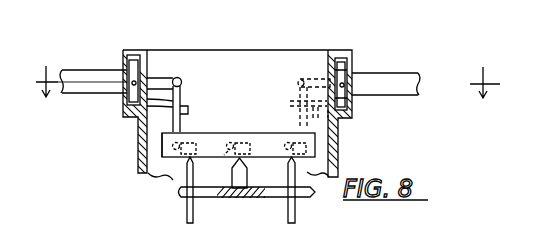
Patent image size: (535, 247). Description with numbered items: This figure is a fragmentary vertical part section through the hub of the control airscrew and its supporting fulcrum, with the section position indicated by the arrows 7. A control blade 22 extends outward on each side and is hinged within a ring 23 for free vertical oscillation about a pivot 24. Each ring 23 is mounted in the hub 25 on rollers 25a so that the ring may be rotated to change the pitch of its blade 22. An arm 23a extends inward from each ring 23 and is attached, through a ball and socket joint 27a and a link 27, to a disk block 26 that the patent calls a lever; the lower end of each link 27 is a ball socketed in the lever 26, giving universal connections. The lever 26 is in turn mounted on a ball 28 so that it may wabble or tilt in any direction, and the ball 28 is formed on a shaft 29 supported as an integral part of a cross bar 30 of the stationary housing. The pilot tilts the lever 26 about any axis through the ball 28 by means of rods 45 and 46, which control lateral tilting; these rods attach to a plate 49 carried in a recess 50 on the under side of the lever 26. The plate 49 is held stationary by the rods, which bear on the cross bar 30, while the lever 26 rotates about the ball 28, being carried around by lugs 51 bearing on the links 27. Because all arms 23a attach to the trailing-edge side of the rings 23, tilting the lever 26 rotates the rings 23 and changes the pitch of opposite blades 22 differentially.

The section line 7- 7 is at (268, 89).
The control blade 22 is at (421, 85).
The ring 23 is at (343, 72).
The arm 23a is at (161, 80).
The pivot 24 is at (345, 91).
The hub 25 is at (277, 50).
The roller 25a is at (126, 61).
The disk block (lever) 26 is at (207, 138).
The link 27 is at (181, 87).
The ball and socket joint 27a is at (297, 86).
The ball 28 is at (244, 142).
The shaft 29 is at (248, 172).
The cross bar 30 is at (261, 197).
The rod 45 is at (187, 212).
The rod 46 is at (297, 209).
The plate 49 is at (167, 153).
The recess 50 is at (196, 151).
The lug 51 is at (317, 120).